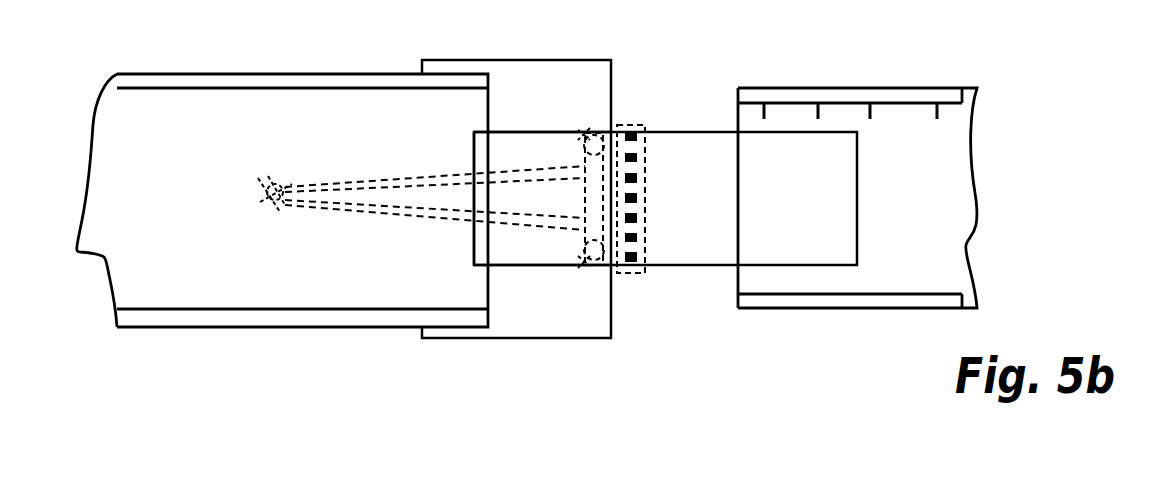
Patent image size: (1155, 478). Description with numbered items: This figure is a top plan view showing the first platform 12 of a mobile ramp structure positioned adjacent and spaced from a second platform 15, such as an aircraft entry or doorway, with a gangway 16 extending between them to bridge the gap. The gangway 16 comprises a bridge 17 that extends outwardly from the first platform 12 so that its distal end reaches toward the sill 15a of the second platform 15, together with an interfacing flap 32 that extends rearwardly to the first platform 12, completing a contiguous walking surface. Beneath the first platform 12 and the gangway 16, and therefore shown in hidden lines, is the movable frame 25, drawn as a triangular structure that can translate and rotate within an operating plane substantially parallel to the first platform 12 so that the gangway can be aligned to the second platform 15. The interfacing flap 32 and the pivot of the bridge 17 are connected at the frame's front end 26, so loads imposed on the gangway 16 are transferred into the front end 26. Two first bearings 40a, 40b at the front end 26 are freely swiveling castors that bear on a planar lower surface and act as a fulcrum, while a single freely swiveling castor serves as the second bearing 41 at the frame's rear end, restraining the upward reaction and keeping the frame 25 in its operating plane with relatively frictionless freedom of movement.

The first platform 12 is at (282, 200).
The second platform 15 is at (857, 198).
The sill 15a is at (738, 105).
The gangway 16 is at (678, 0).
The bridge 17 is at (665, 198).
The movable frame 25 is at (402, 208).
The front end 26 is at (638, 274).
The interfacing flap 32 is at (542, 198).
The first bearing 40a is at (597, 262).
The first bearing 40b is at (593, 135).
The second bearing 41 is at (276, 212).